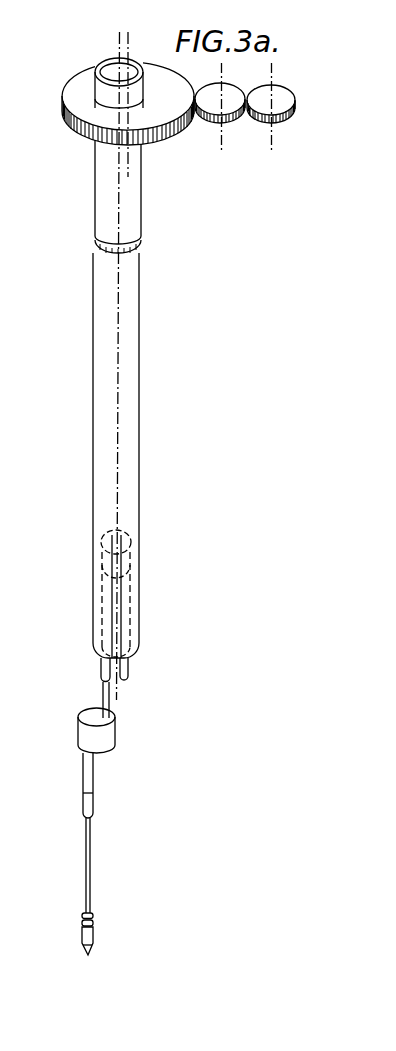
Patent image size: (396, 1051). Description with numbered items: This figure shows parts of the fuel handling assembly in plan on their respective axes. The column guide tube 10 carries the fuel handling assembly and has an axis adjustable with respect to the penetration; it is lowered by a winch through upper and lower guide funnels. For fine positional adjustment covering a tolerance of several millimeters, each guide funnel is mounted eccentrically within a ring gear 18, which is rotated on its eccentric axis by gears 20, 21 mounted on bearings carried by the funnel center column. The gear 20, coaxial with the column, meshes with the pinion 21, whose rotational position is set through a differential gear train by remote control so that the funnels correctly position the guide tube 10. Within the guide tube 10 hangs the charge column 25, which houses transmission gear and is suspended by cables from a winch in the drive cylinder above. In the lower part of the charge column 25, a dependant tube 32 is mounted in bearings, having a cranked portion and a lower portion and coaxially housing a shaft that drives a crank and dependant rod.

The guide tube 10 is at (110, 70).
The ring gear 18 is at (147, 120).
The gear 20 is at (229, 99).
The pinion 21 is at (279, 99).
The charge column 25 is at (130, 542).
The dependant tube 32 is at (103, 566).